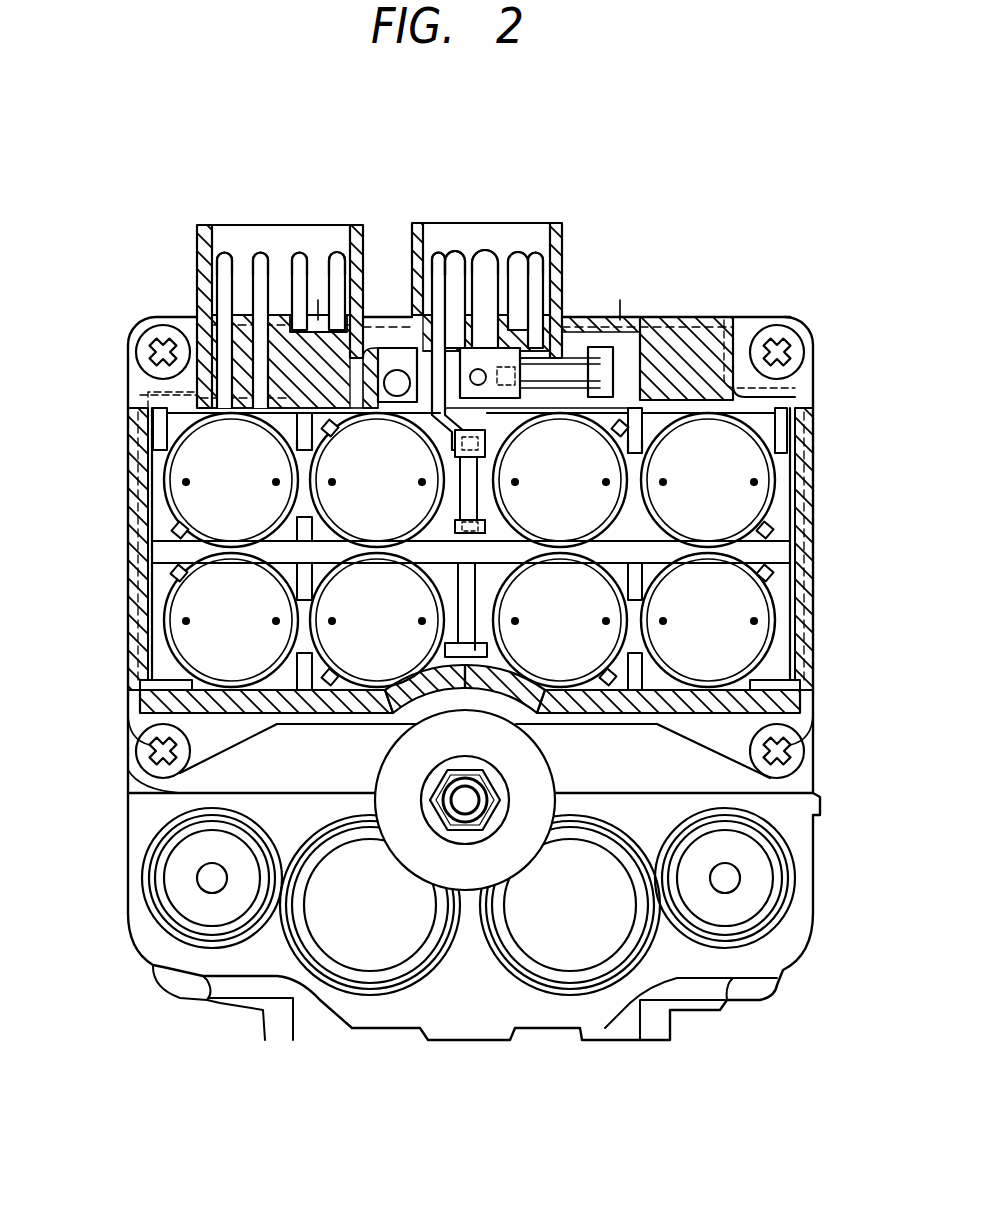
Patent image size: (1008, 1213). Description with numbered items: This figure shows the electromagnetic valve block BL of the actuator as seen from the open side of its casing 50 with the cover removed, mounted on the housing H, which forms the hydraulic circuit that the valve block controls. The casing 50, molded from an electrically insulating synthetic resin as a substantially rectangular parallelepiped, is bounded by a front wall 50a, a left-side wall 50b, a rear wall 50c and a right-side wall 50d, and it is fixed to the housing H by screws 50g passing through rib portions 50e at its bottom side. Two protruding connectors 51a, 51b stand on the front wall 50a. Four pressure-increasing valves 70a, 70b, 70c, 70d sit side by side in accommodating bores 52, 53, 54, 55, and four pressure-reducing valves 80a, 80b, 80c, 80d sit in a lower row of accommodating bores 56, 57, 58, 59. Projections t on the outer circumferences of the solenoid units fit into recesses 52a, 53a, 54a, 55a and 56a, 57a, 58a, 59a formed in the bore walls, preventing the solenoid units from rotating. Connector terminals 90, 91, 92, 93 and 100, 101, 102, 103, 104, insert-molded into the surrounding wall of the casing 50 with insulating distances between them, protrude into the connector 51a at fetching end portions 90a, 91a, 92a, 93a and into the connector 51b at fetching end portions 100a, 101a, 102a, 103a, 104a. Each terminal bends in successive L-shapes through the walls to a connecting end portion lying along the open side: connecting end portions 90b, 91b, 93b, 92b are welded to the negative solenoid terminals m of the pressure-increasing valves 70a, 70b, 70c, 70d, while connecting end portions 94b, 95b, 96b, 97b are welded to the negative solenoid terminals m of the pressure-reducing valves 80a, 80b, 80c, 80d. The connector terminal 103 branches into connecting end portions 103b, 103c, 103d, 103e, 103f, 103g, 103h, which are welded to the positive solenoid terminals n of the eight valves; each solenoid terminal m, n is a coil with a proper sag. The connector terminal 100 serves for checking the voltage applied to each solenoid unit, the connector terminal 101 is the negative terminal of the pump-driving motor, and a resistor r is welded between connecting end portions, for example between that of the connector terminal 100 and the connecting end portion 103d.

The casing 50 is at (700, 300).
The front wall 50a is at (640, 335).
The left-side wall 50b is at (140, 420).
The rear wall 50c is at (665, 727).
The right-side wall 50d is at (805, 420).
The rib portions 50e is at (130, 355).
The screw 50g is at (150, 325).
The connector 51a is at (200, 250).
The connector 51b is at (557, 270).
The accommodating bore 52 is at (188, 486).
The recess 52a is at (176, 533).
The accommodating bore 53 is at (334, 486).
The recess 53a is at (336, 432).
The accommodating bore 54 is at (517, 486).
The recess 54a is at (615, 432).
The accommodating bore 55 is at (665, 486).
The recess 55a is at (770, 533).
The accommodating bore 56 is at (187, 620).
The recess 56a is at (175, 577).
The accommodating bore 57 is at (333, 620).
The recess 57a is at (334, 675).
The accommodating bore 58 is at (605, 620).
The recess 58a is at (604, 675).
The accommodating bore 59 is at (663, 620).
The recess 59a is at (770, 577).
The pressure-increasing valve 70a is at (197, 430).
The pressure-increasing valve 70b is at (398, 395).
The pressure-increasing valve 70c is at (598, 350).
The pressure-increasing valve 70d is at (720, 390).
The pressure-reducing valve 80a is at (213, 700).
The pressure-reducing valve 80b is at (422, 680).
The pressure-reducing valve 80c is at (515, 680).
The pressure-reducing valve 80d is at (730, 700).
The connector terminal 90 is at (226, 300).
The fetching end portion 90a is at (220, 262).
The connecting end portion 90b is at (153, 425).
The connector terminal 91 is at (263, 300).
The fetching end portion 91a is at (258, 265).
The connecting end portion 91b is at (296, 446).
The connector terminal 92 is at (300, 290).
The fetching end portion 92a is at (296, 262).
The connecting end portion 92b is at (787, 425).
The connector terminal 93 is at (338, 290).
The fetching end portion 93a is at (335, 262).
The connecting end portion 93b is at (642, 435).
The connecting end portion 94b is at (150, 684).
The connecting end portion 95b is at (303, 700).
The connecting end portion 96b is at (634, 700).
The connecting end portion 97b is at (790, 684).
The connector terminal 100 is at (436, 300).
The fetching end portion 100a is at (437, 262).
The connector terminal 101 is at (456, 300).
The fetching end portion 101a is at (452, 265).
The connector terminal 102 is at (486, 300).
The fetching end portion 102a is at (485, 262).
The connector terminal 103 is at (800, 552).
The fetching end portion 103a is at (520, 262).
The connecting end portion 103b is at (295, 527).
The connecting end portion 103c is at (297, 577).
The connecting end portion 103d is at (455, 527).
The connecting end portion 103e is at (458, 580).
The connecting end portion 103f is at (475, 580).
The connecting end portion 103g is at (487, 527).
The connecting end portion 103h is at (642, 580).
The connector terminal 104 is at (536, 300).
The fetching end portion 104a is at (538, 262).
The electromagnetic valve block BL is at (786, 300).
The housing H is at (780, 998).
The negative solenoid terminal m is at (188, 481).
The positive solenoid terminal n is at (275, 481).
The resistor r is at (535, 388).
The projection t is at (840, 585).